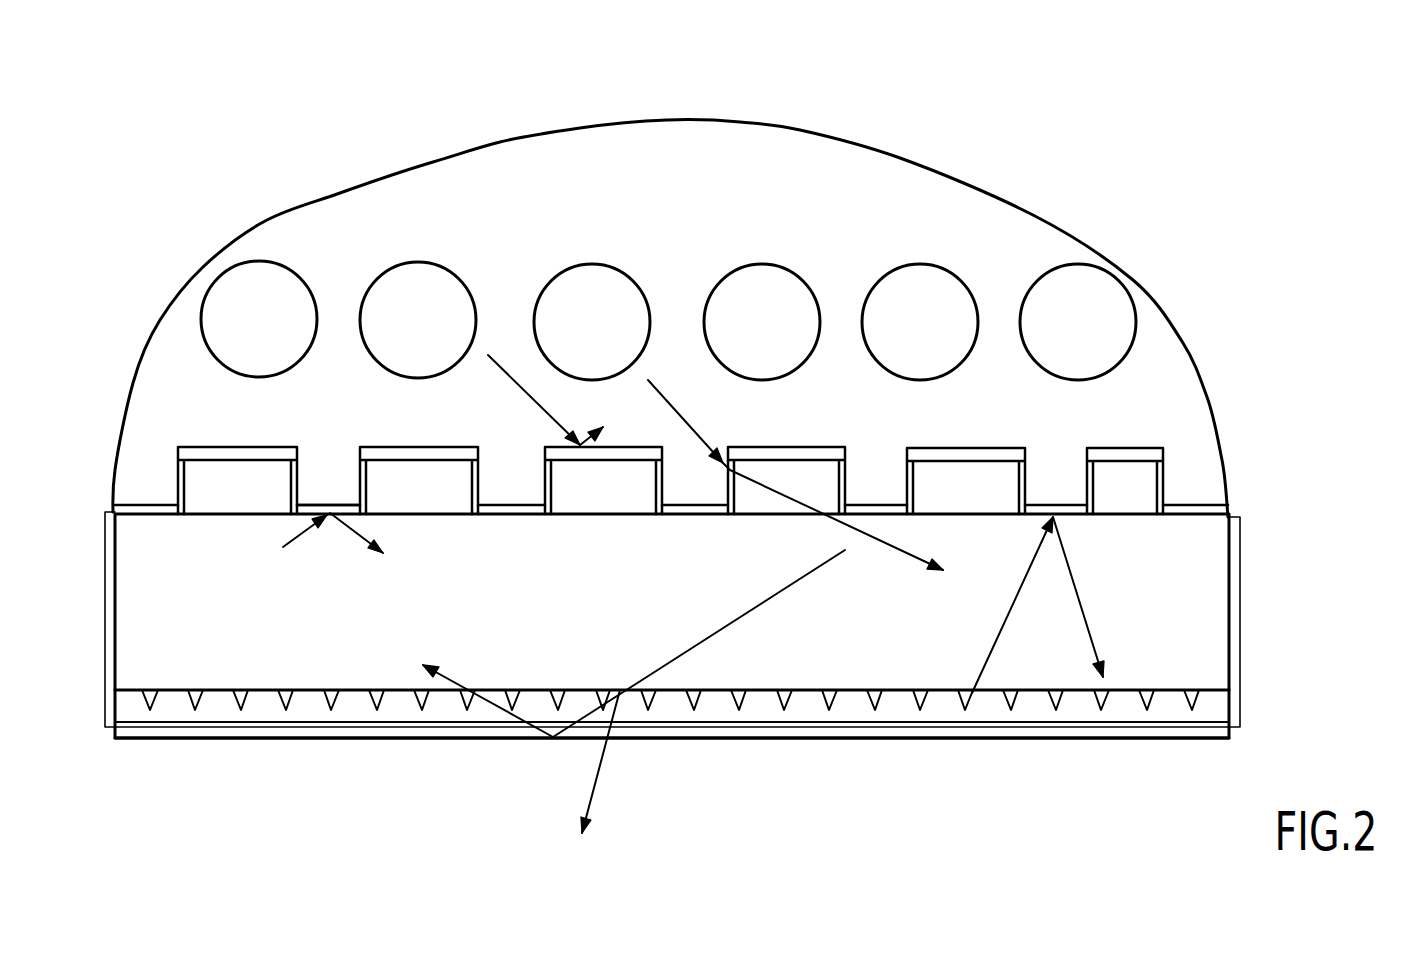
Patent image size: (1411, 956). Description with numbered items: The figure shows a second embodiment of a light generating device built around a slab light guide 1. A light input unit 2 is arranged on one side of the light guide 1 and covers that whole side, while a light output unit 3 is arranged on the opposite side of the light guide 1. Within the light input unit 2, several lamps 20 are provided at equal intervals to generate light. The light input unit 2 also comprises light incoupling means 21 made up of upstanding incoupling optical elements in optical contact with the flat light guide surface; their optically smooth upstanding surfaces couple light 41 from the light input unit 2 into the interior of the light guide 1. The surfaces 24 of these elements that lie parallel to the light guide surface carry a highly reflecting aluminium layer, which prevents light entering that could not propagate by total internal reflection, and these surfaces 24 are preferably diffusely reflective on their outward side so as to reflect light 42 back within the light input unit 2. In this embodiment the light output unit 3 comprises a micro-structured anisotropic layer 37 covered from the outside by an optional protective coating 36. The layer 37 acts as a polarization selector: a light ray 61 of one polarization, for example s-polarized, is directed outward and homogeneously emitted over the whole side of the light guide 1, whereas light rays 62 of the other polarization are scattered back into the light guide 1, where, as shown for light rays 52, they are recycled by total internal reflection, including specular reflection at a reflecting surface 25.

The slab light guide 1 is at (1262, 611).
The light input unit 2 is at (1262, 394).
The light output unit 3 is at (1262, 710).
The lamps 20 is at (762, 290).
The light incoupling means 21 is at (1185, 479).
The surfaces of the optical elements 24 is at (420, 455).
The reflecting surface 25 is at (318, 505).
The protective coating 36 is at (885, 738).
The micro-structured anisotropic layer 37 is at (1122, 710).
The light 41 is at (687, 415).
The light 42 is at (510, 373).
The light rays 52 is at (350, 527).
The light ray 61 is at (600, 765).
The light rays 62 is at (447, 677).